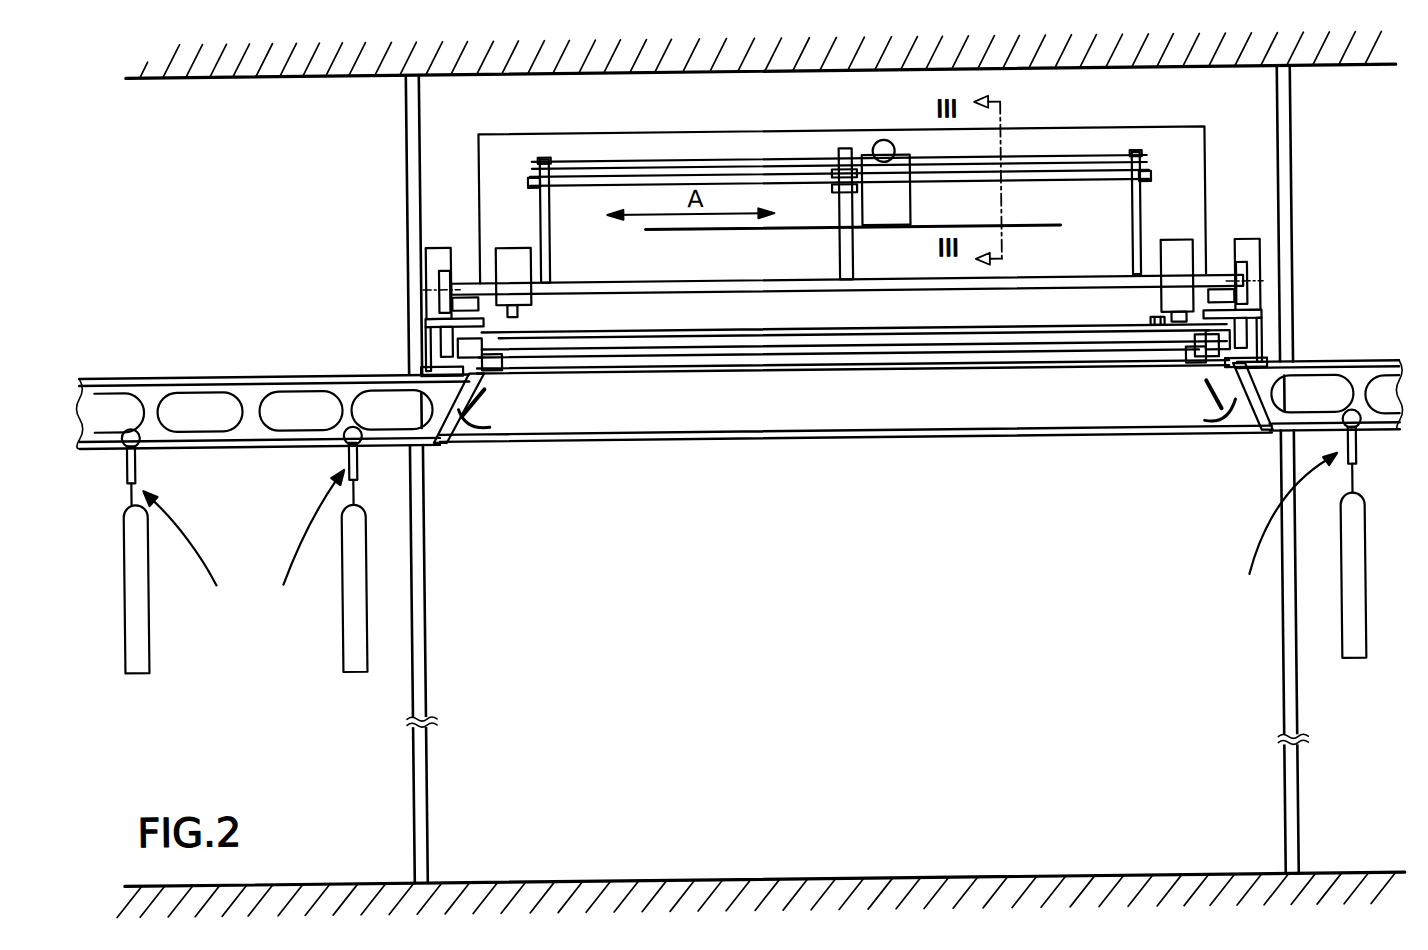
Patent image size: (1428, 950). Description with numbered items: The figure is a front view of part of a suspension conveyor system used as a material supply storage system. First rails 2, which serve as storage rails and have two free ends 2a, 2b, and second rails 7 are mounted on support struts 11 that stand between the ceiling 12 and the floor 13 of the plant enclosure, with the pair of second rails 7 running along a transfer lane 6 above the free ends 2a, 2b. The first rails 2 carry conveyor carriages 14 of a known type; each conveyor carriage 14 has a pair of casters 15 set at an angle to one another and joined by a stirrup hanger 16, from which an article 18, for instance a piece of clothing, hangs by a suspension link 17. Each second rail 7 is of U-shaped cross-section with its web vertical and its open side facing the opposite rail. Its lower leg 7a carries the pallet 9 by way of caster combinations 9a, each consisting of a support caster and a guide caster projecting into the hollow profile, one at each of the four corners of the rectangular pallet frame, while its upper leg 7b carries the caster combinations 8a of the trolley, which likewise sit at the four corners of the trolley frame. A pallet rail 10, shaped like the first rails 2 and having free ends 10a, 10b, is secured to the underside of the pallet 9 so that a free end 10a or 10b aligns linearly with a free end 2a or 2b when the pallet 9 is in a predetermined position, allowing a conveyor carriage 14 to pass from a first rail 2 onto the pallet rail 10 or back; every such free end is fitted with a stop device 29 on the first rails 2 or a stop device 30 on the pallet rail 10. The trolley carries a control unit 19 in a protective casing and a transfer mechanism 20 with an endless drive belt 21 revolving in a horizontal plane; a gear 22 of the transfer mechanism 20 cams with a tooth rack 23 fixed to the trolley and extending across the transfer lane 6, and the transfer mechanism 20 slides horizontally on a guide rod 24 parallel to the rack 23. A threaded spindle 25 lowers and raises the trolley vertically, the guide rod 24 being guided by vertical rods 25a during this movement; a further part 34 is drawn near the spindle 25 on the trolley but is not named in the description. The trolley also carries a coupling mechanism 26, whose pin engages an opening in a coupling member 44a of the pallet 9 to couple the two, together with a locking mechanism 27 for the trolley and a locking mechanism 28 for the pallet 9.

The first rail 2 is at (738, 373).
The free end of first rail 2a is at (1382, 394).
The free end of first rail 2b is at (119, 413).
The transfer lane 6 is at (850, 749).
The second rail 7 is at (432, 310).
The lower leg of second rail 7a is at (426, 338).
The upper leg of second rail 7b is at (430, 288).
The caster combination of trolley 8a is at (462, 270).
The pallet 9 is at (1008, 345).
The caster combination of pallet 9a is at (480, 375).
The pallet rail 10 is at (853, 446).
The free end of pallet rail 10a is at (457, 441).
The free end of pallet rail 10b is at (1228, 440).
The support strut 11 is at (405, 114).
The ceiling 12 is at (300, 57).
The floor 13 is at (498, 880).
The conveyor carriage 14 is at (741, 535).
The caster 15 is at (130, 422).
The stirrup hanger 16 is at (128, 463).
The suspension link 17 is at (128, 492).
The article 18 is at (135, 599).
The control unit 19 is at (714, 148).
The transfer mechanism 20 is at (918, 146).
The endless drive belt 21 is at (636, 230).
The gear 22 is at (885, 141).
The tooth rack 23 is at (843, 160).
The guide rod 24 is at (611, 175).
The threaded spindle 25 is at (848, 240).
The vertical rod 25a is at (553, 262).
The coupling mechanism 26 is at (1178, 255).
The locking mechanism for trolley 27 is at (786, 243).
The locking mechanism for pallet 28 is at (516, 263).
The stop device 29 is at (395, 400).
The stop device 30 is at (490, 426).
The nut 34 is at (840, 190).
The coupling member 44a is at (1168, 324).